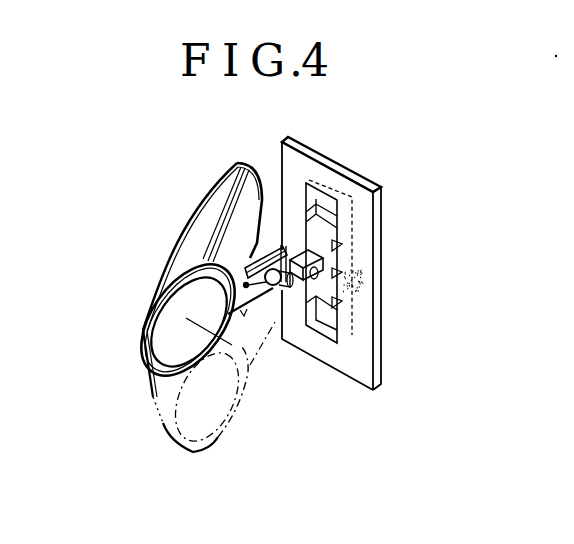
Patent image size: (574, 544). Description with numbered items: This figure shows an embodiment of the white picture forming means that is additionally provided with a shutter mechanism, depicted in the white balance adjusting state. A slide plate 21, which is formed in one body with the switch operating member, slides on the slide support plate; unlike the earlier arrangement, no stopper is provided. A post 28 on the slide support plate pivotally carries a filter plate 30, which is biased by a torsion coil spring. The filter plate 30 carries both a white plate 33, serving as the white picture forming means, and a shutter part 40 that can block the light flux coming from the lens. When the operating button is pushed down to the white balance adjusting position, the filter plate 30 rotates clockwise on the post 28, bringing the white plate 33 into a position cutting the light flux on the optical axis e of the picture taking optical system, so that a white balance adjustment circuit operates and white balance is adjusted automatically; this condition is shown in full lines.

The slide plate 21 is at (320, 236).
The post 28 is at (283, 292).
The filter plate 30 is at (178, 269).
The white plate 33 is at (172, 335).
The shutter part 40 is at (217, 204).
The optical axis e is at (157, 301).